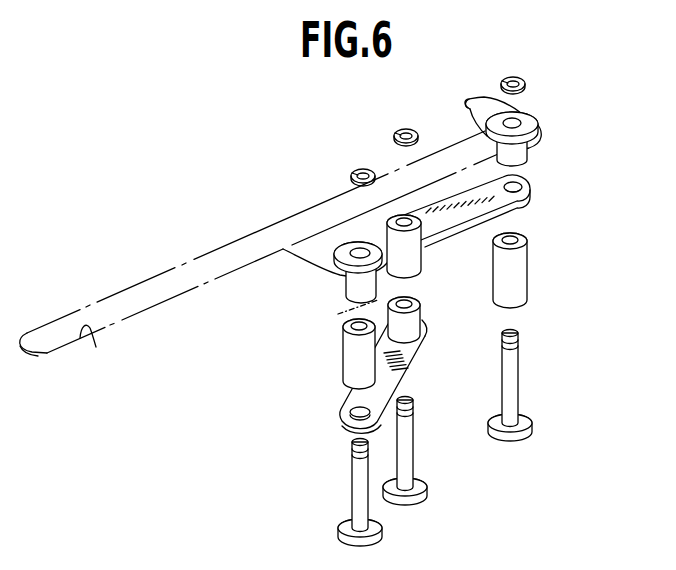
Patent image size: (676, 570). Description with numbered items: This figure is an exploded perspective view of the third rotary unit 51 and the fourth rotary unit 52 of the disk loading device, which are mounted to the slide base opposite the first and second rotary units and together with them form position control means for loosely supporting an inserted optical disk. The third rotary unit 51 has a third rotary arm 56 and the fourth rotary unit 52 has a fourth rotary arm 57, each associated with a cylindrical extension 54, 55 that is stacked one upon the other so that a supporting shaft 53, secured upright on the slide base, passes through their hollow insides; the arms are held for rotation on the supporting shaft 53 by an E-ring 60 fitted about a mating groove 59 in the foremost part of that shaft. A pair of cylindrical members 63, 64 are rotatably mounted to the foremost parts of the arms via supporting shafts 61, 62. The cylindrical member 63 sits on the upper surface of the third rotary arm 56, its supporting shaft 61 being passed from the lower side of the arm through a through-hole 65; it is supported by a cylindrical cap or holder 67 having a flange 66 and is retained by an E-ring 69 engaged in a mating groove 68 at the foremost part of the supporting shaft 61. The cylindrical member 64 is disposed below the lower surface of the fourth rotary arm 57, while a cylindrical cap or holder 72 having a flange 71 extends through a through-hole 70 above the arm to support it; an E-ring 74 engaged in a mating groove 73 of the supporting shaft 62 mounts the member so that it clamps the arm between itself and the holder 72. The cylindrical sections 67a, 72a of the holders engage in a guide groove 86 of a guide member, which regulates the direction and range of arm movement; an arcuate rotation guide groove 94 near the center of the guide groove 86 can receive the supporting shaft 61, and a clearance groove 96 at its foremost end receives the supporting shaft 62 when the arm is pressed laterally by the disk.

The third rotary unit 51 is at (361, 371).
The fourth rotary unit 52 is at (552, 268).
The supporting shaft 53 is at (425, 449).
The cylindrical extension 54 is at (423, 318).
The cylindrical extension 55 is at (421, 260).
The third rotary arm 56 is at (395, 372).
The fourth rotary arm 57 is at (493, 210).
The mating groove 59 is at (415, 408).
The E-ring 60 is at (399, 128).
The supporting shaft 61 is at (337, 492).
The supporting shaft 62 is at (531, 386).
The cylindrical member 63 is at (355, 365).
The cylindrical member 64 is at (518, 296).
The through-hole 65 is at (352, 414).
The flange 66 is at (342, 250).
The cylindrical cap or holder 67 is at (337, 270).
The cylindrical section 67a is at (350, 284).
The mating groove 68 is at (352, 456).
The E-ring 69 is at (357, 168).
The through-hole 70 is at (528, 185).
The flange 71 is at (540, 120).
The cylindrical cap or holder 72 is at (515, 133).
The cylindrical section 72a is at (530, 152).
The mating groove 73 is at (520, 345).
The E-ring 74 is at (517, 75).
The guide groove 86 is at (92, 347).
The rotation guide groove 94 is at (344, 314).
The clearance groove 96 is at (466, 99).